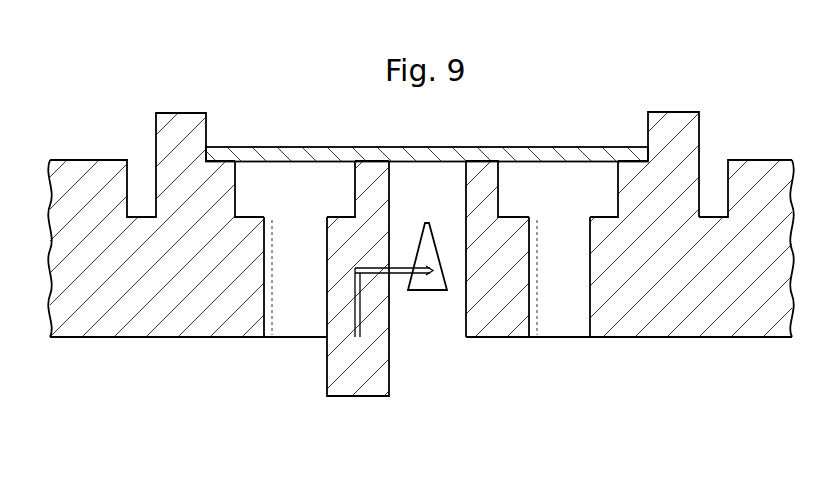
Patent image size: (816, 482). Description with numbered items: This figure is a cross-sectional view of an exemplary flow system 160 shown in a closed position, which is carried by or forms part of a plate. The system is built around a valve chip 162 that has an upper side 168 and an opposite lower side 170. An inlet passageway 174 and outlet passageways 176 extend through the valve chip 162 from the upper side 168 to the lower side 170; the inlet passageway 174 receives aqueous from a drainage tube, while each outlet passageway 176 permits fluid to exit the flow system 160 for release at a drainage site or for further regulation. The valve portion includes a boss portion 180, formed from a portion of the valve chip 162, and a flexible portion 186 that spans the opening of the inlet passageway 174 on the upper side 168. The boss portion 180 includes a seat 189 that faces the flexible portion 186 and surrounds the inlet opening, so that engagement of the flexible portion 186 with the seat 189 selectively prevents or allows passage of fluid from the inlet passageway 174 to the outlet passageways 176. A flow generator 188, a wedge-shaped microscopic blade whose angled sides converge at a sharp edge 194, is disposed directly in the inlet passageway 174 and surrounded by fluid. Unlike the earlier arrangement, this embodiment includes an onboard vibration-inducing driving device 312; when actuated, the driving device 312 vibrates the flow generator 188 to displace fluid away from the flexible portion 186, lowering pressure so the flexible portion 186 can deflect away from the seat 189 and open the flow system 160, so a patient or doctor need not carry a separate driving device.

The flow system 160 is at (560, 76).
The valve chip 162 is at (108, 328).
The upper side 168 is at (680, 112).
The lower side 170 is at (728, 340).
The inlet passageway 174 is at (463, 307).
The outlet passageway 176 is at (277, 318).
The boss portion 180 is at (365, 190).
The flexible portion 186 is at (447, 157).
The flow generator 188 is at (426, 293).
The seat 189 is at (372, 158).
The sharp edge 194 is at (427, 222).
The driving device 312 is at (353, 385).